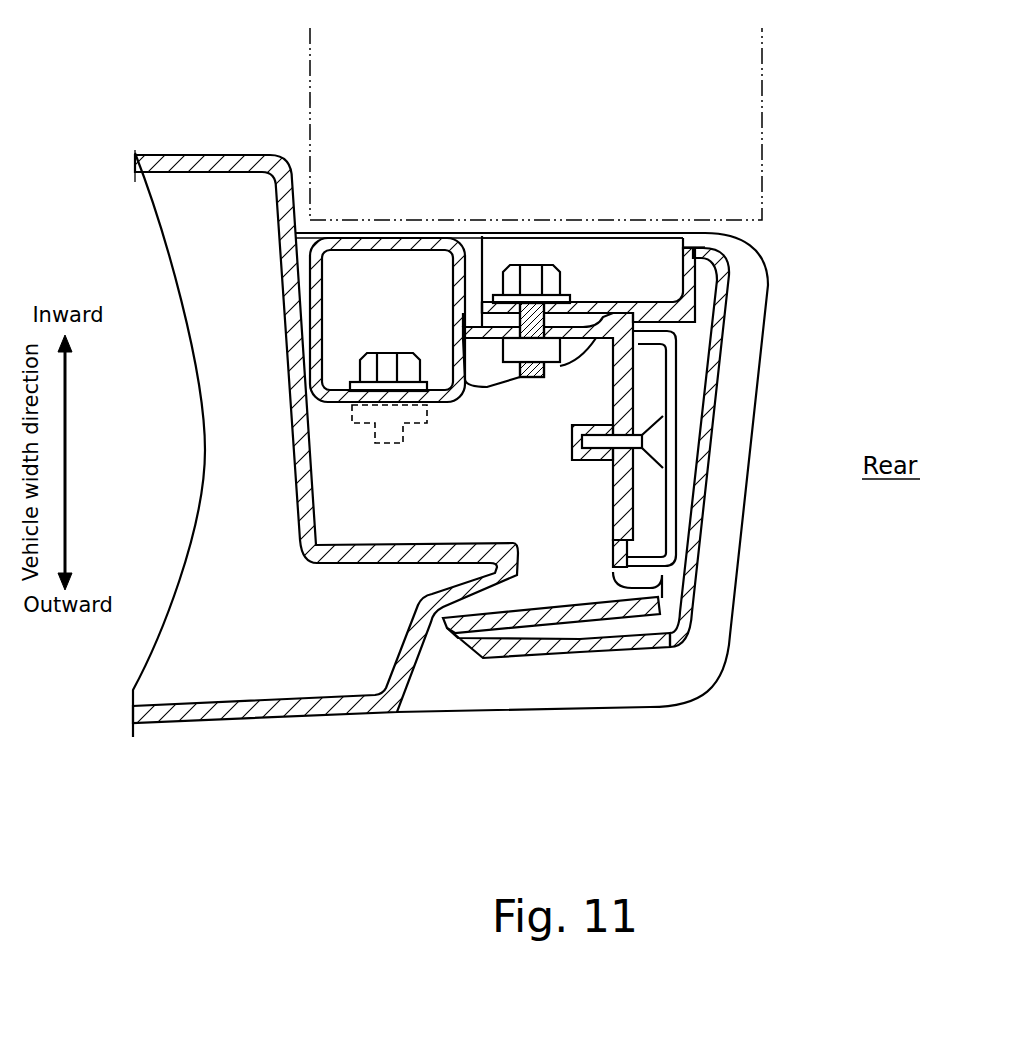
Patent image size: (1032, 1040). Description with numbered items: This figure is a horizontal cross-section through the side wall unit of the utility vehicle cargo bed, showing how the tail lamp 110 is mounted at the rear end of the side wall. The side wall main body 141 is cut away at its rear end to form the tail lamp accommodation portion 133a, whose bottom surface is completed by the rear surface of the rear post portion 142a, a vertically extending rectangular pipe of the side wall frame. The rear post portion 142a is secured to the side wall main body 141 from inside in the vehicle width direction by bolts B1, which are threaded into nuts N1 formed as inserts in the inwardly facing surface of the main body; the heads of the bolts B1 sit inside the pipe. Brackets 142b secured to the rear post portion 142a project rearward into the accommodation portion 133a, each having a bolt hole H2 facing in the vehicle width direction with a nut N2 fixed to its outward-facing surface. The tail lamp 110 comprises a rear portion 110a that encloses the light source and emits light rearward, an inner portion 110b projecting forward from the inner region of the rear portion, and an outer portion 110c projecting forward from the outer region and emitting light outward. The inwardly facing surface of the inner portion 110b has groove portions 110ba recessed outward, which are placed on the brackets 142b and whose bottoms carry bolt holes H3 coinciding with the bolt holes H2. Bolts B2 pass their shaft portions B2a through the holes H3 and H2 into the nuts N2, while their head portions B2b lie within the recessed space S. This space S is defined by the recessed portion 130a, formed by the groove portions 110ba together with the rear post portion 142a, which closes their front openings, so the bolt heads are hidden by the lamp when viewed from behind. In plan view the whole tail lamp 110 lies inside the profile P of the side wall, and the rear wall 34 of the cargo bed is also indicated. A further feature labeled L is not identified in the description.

The tail lamp 110 is at (761, 347).
The rear portion 110a is at (712, 500).
The inner portion 110b is at (655, 247).
The groove portions 110ba is at (648, 293).
The outer portion 110c is at (620, 640).
The recessed portion 130a is at (617, 278).
The tail lamp accommodation portion 133a is at (527, 527).
The side wall main body 141 is at (235, 722).
The rear post portion 142a is at (360, 237).
The brackets 142b is at (487, 380).
The bolts B1 is at (383, 352).
The nuts N1 is at (405, 443).
The bolts B2 is at (533, 266).
The shaft portions B2a is at (527, 377).
The head portions B2b is at (500, 296).
The nuts N2 is at (553, 355).
The bolt hole H2 is at (513, 310).
The bolt hole H3 is at (595, 300).
The recessed space S is at (558, 250).
The locking member L is at (657, 442).
The profile P is at (729, 637).
The rear wall 34 is at (762, 68).